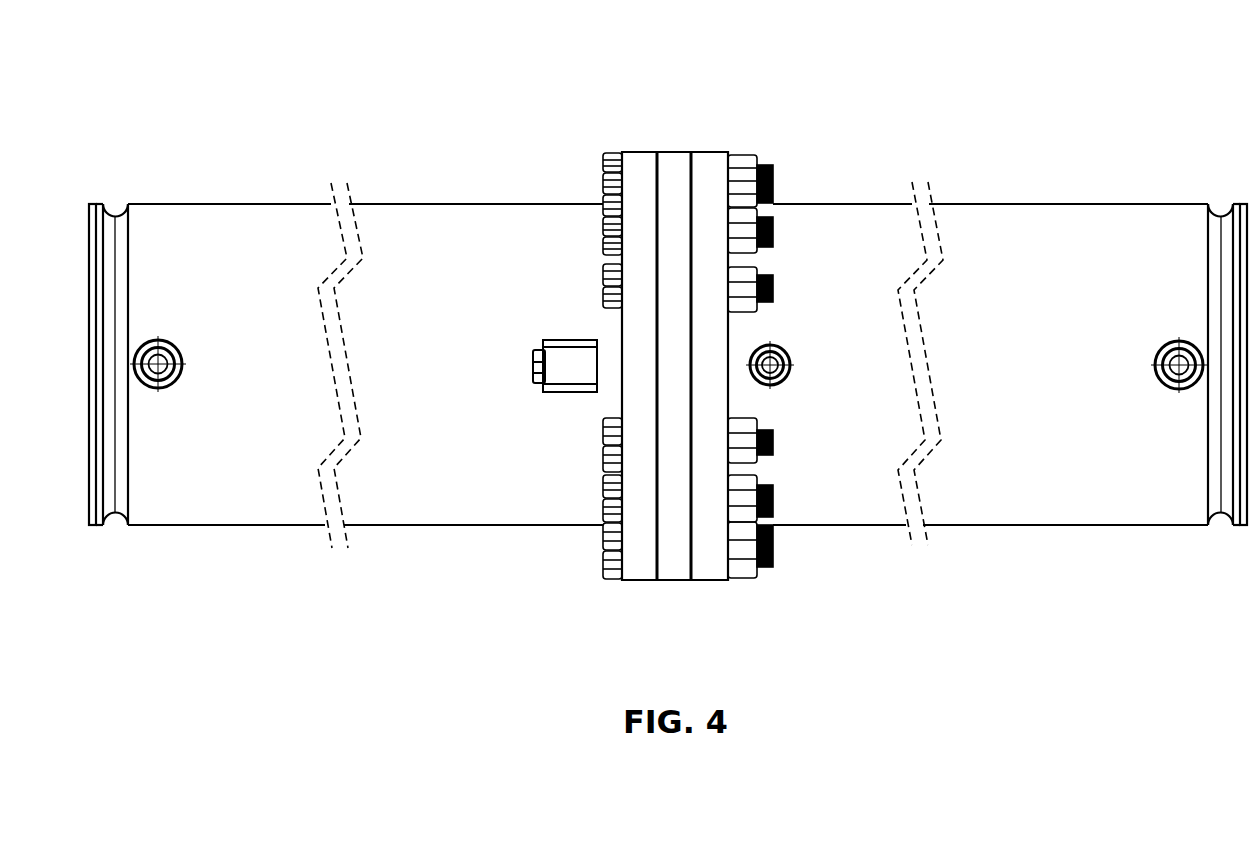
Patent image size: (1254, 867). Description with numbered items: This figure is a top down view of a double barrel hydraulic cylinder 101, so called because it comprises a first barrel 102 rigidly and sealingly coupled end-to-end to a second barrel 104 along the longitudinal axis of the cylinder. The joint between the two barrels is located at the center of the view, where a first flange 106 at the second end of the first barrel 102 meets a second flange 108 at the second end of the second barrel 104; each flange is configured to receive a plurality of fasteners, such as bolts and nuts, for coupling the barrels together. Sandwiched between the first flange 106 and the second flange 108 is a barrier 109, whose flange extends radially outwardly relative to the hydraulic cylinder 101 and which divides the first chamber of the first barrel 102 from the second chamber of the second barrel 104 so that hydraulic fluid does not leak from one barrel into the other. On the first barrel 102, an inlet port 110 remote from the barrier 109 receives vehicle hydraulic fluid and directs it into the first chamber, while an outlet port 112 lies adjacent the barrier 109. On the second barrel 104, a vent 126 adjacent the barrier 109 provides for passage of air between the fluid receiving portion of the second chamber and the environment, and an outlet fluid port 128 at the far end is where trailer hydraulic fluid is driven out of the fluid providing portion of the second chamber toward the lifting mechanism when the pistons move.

The hydraulic cylinder 101 is at (1111, 84).
The first barrel 102 is at (1000, 290).
The second barrel 104 is at (431, 294).
The first flange 106 is at (712, 543).
The second flange 108 is at (635, 543).
The barrier 109 is at (673, 179).
The inlet port 110 is at (1181, 324).
The outlet port 112 is at (779, 325).
The vent 126 is at (560, 406).
The outlet fluid port 128 is at (182, 335).